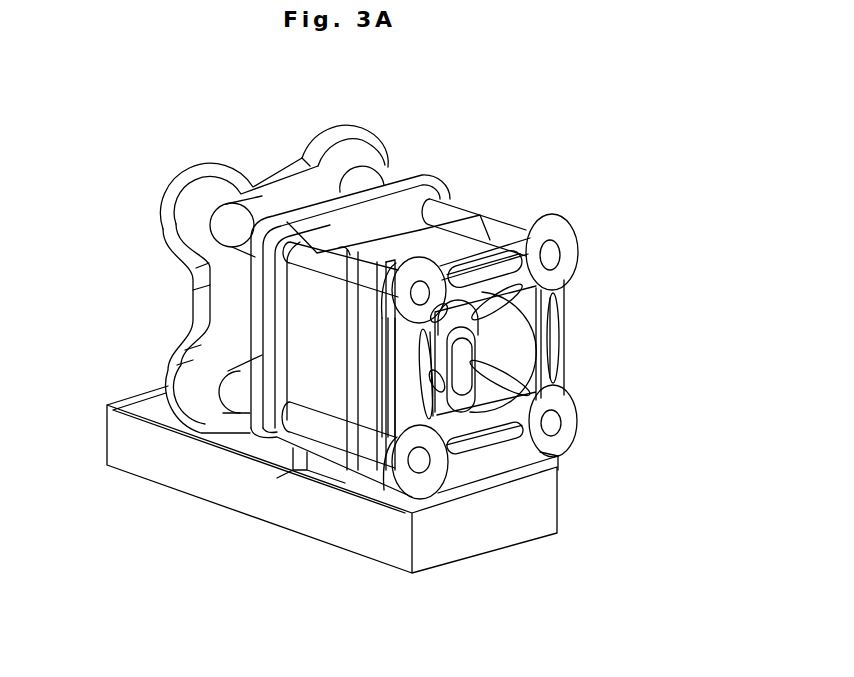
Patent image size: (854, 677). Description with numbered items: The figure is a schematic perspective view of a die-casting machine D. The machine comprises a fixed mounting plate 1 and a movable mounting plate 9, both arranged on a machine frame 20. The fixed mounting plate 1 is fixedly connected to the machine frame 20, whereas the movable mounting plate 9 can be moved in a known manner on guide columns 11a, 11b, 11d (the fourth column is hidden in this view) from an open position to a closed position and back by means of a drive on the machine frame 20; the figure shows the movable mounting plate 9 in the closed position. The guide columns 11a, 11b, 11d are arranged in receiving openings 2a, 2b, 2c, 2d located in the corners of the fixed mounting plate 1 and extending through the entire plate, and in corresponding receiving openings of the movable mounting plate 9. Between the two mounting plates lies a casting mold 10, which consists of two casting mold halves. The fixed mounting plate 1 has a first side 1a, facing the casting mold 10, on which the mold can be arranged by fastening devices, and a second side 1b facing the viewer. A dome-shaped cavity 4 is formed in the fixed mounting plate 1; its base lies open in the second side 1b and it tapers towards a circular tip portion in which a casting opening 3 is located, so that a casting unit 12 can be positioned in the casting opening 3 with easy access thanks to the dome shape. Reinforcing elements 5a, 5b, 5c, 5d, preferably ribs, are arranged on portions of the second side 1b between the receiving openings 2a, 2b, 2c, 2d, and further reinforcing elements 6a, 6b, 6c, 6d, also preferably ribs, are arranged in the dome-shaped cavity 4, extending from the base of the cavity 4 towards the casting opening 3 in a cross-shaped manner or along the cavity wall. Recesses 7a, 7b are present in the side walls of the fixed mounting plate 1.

The fixed mounting plate 1 is at (533, 336).
The first side 1a is at (526, 211).
The second side 1b is at (553, 445).
The receiving opening 2a is at (420, 288).
The receiving opening 2b is at (552, 257).
The receiving opening 2c is at (420, 460).
The receiving opening 2d is at (553, 423).
The casting opening 3 is at (437, 323).
The dome-shaped cavity 4 is at (505, 327).
The reinforcing element 5a is at (450, 283).
The reinforcing element 5b is at (555, 344).
The reinforcing element 5c is at (488, 443).
The reinforcing element 5d is at (423, 390).
The reinforcing element 6a is at (465, 337).
The reinforcing element 6b is at (503, 297).
The reinforcing element 6c is at (510, 390).
The reinforcing element 6d is at (432, 400).
The recess 7a is at (480, 238).
The recess 7b is at (393, 383).
The movable mounting plate 9 is at (357, 125).
The casting mold 10 is at (338, 330).
The guide column 11a is at (313, 257).
The guide column 11b is at (447, 210).
The guide column 11d is at (315, 420).
The casting unit 12 is at (465, 410).
The machine frame 20 is at (505, 530).
The die-casting machine D is at (493, 160).